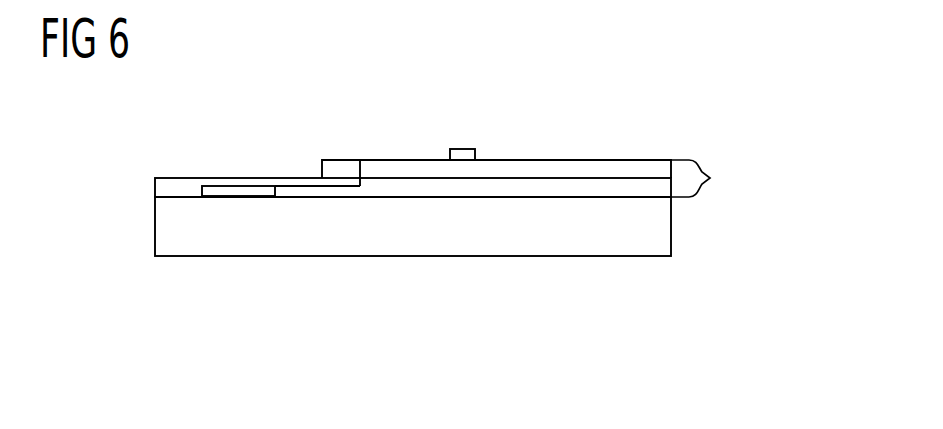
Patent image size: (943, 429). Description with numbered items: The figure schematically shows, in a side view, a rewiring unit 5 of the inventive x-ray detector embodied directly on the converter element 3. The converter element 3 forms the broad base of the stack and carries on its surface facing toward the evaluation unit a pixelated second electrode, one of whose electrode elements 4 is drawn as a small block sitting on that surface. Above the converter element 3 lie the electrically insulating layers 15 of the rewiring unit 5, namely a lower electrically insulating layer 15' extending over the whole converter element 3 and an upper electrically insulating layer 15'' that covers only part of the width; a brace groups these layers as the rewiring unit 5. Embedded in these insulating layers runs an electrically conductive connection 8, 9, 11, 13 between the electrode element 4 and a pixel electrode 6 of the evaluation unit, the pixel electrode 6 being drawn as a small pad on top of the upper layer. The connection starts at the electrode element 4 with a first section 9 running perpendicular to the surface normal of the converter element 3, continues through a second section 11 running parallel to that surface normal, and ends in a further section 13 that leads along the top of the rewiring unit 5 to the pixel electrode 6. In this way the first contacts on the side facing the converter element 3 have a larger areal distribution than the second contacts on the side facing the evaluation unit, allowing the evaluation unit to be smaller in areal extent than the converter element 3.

The converter element 3 is at (615, 243).
The electrode elements 4 is at (229, 190).
The rewiring unit 5 is at (700, 178).
The pixel electrodes 6 is at (462, 148).
The electrically conductive connection 8 is at (462, 108).
The first section 9 is at (289, 185).
The second section 11 is at (358, 170).
The electrically conductive connection 13 is at (412, 158).
The electrically insulating layer 15 is at (413, 139).
The electrically insulating layer 15' is at (413, 149).
The electrically insulating layer 15'' is at (496, 129).